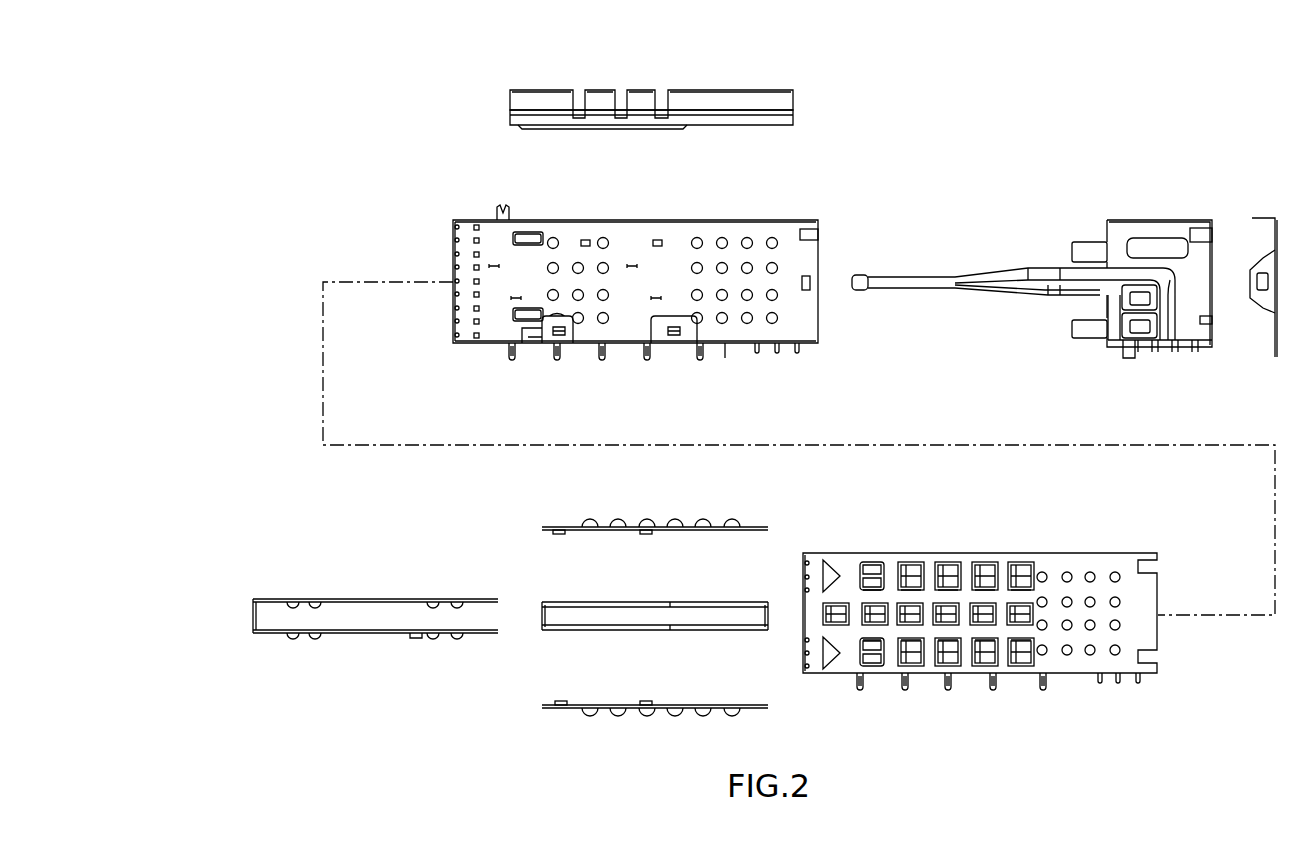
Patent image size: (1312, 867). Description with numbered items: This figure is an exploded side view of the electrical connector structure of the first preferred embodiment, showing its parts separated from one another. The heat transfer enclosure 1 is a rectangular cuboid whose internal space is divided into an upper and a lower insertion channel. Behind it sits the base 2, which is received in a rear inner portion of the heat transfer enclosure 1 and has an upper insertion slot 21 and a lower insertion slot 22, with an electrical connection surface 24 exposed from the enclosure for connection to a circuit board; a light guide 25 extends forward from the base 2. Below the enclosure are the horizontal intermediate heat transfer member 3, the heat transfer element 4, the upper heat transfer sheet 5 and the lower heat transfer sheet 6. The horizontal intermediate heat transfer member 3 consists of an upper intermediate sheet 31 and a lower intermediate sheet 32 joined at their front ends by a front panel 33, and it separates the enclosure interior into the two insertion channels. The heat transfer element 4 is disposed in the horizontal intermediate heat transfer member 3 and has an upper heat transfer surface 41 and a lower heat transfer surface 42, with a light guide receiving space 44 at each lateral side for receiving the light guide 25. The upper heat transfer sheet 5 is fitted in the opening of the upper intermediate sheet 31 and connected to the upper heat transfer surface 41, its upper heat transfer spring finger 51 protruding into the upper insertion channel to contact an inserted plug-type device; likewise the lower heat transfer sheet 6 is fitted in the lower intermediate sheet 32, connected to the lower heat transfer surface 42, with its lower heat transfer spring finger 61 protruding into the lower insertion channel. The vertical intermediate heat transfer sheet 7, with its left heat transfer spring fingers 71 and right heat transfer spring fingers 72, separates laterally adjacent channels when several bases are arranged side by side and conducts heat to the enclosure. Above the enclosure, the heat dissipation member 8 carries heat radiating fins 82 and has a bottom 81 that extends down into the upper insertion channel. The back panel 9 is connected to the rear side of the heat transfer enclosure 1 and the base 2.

The heat transfer enclosure 1 is at (482, 200).
The base 2 is at (1052, 279).
The horizontal intermediate heat transfer member 3 is at (339, 606).
The heat transfer element 4 is at (624, 613).
The upper heat transfer sheet 5 is at (617, 496).
The lower heat transfer sheet 6 is at (617, 741).
The vertical intermediate heat transfer sheet 7 is at (980, 607).
The heat dissipation member 8 is at (631, 99).
The back panel 9 is at (1268, 218).
The upper insertion slot 21 is at (1073, 250).
The lower insertion slot 22 is at (1073, 330).
The electrical connection surface 24 is at (1178, 352).
The light guide 25 is at (905, 283).
The upper intermediate sheet 31 is at (372, 599).
The lower intermediate sheet 32 is at (372, 633).
The front panel 33 is at (253, 617).
The upper heat transfer surface 41 is at (645, 602).
The lower heat transfer surface 42 is at (645, 630).
The light guide receiving space 44 is at (595, 618).
The upper heat transfer spring finger 51 is at (645, 527).
The lower heat transfer spring finger 61 is at (645, 710).
The left heat transfer spring finger 71 is at (953, 563).
The right heat transfer spring finger 72 is at (947, 577).
The bottom 81 is at (595, 126).
The heat radiating fin 82 is at (690, 92).